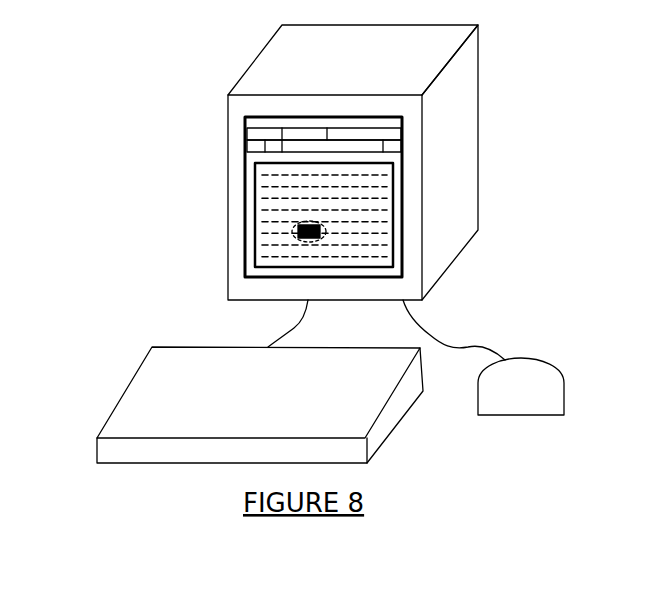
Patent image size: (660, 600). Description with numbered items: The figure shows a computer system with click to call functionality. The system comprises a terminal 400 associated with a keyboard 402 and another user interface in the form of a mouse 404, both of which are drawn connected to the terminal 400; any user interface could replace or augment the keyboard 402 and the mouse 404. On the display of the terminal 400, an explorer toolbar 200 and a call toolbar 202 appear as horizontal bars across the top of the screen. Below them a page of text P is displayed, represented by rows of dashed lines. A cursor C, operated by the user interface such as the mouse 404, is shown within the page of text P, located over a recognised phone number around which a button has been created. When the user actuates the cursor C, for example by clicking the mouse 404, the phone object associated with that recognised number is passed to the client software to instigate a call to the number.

The explorer toolbar 200 is at (247, 133).
The call toolbar 202 is at (247, 146).
The terminal 400 is at (366, 180).
The page of text P is at (265, 237).
The cursor C is at (322, 240).
The keyboard 402 is at (128, 373).
The mouse 404 is at (558, 368).